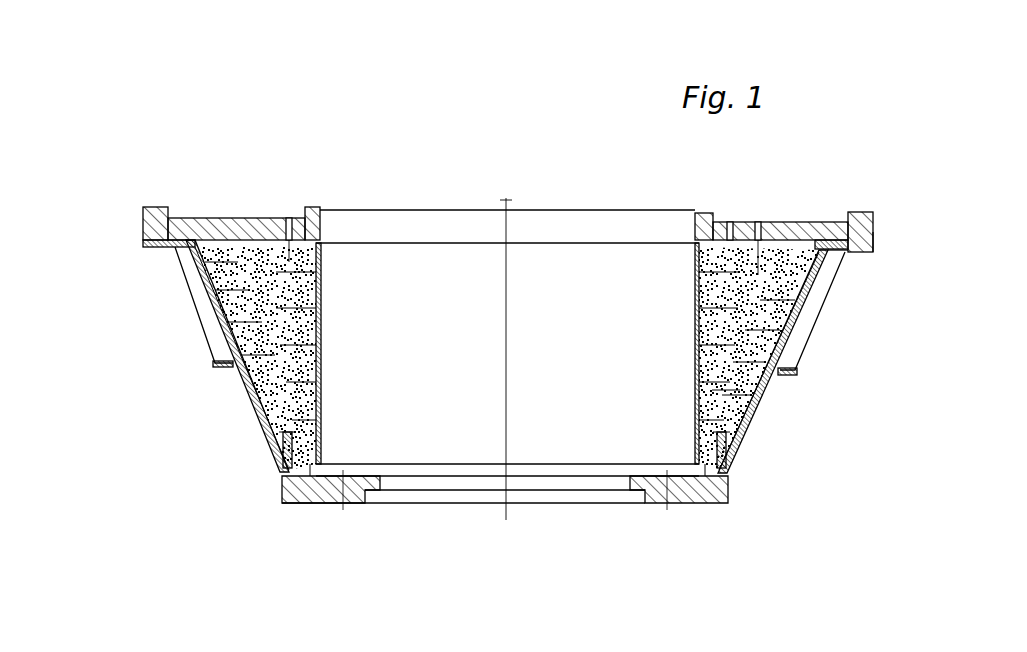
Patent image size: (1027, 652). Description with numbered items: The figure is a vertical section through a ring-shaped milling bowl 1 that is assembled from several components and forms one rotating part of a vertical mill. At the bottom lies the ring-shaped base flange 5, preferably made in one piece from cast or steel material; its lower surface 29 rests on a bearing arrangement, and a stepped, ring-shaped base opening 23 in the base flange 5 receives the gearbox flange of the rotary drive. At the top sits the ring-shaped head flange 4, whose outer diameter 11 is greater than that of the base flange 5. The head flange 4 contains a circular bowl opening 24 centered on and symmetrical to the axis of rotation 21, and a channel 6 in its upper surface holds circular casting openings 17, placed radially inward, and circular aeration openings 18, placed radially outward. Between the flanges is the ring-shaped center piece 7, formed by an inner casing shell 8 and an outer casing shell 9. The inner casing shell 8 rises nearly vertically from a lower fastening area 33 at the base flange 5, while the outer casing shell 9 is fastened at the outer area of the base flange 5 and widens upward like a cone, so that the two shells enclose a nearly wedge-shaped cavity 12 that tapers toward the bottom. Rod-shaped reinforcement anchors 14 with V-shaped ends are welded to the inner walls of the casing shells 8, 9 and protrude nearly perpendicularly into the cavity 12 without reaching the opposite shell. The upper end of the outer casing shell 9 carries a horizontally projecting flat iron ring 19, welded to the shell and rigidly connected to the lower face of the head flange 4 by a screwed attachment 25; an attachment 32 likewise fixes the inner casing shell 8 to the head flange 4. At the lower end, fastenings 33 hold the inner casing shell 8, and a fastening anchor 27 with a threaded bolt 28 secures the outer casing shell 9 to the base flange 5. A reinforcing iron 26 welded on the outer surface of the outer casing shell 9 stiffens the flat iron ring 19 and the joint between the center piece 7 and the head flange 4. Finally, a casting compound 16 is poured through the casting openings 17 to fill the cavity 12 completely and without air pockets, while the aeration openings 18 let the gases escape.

The milling bowl 1 is at (356, 116).
The head flange 4 is at (242, 232).
The base flange 5 is at (293, 492).
The channel 6 is at (760, 221).
The center piece 7 is at (230, 367).
The inner casing shell 8 is at (322, 327).
The outer casing shell 9 is at (262, 289).
The outer diameter 11 is at (874, 232).
The cavity 12 is at (247, 284).
The reinforcement anchors 14 is at (750, 415).
The casting compound 16 is at (787, 334).
The casting openings 17 is at (289, 217).
The aeration openings 18 is at (198, 220).
The flat iron ring 19 is at (850, 250).
The axis of rotation 21 is at (511, 198).
The base opening 23 is at (437, 482).
The bowl opening 24 is at (590, 209).
The screwed attachment 25 is at (846, 254).
The reinforcing iron 26 is at (808, 305).
The fastening anchor 27 is at (720, 390).
The threaded bolt 28 is at (728, 466).
The lower surface 29 is at (323, 498).
The attachment 32 is at (321, 240).
The fastening area 33 is at (320, 466).